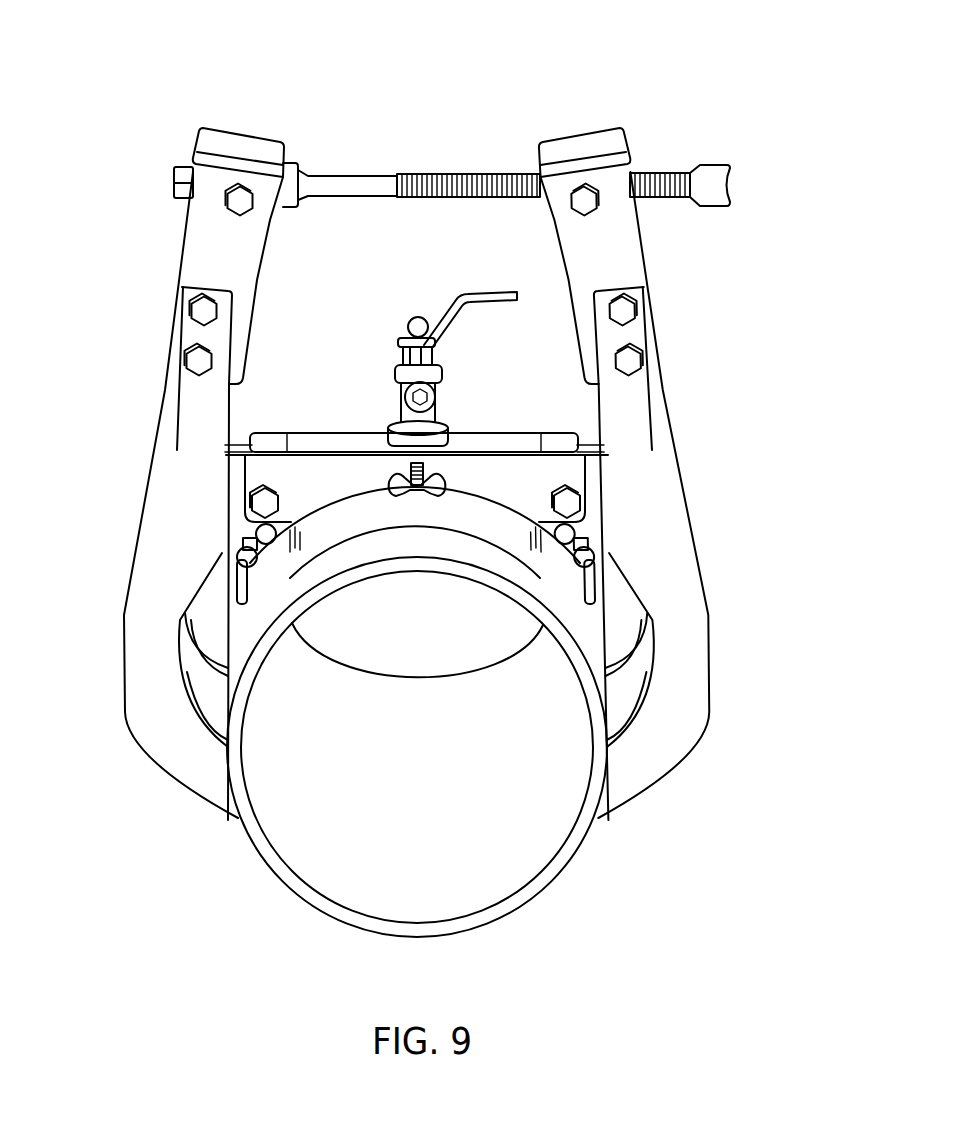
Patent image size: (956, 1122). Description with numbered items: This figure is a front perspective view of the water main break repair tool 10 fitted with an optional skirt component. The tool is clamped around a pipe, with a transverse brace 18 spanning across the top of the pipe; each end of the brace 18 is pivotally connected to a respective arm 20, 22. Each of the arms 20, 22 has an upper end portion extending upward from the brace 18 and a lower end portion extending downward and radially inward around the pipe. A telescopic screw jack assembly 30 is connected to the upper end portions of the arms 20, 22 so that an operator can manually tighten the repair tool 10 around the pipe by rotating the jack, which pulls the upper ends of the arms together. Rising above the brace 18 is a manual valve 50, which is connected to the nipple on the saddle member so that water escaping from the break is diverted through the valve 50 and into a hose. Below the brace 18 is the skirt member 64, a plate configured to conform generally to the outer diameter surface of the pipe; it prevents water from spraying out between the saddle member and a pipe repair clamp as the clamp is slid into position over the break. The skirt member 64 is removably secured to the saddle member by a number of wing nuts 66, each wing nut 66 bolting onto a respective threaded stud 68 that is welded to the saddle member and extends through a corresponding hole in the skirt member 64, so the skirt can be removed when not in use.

The water main break repair tool 10 is at (561, 84).
The transverse brace 18 is at (320, 450).
The arm 20 is at (122, 517).
The arm 22 is at (708, 517).
The telescopic screw jack assembly 30 is at (436, 158).
The manual valve 50 is at (440, 382).
The skirt member 64 is at (364, 529).
The wing nut 66 is at (438, 478).
The threaded stud 68 is at (426, 474).